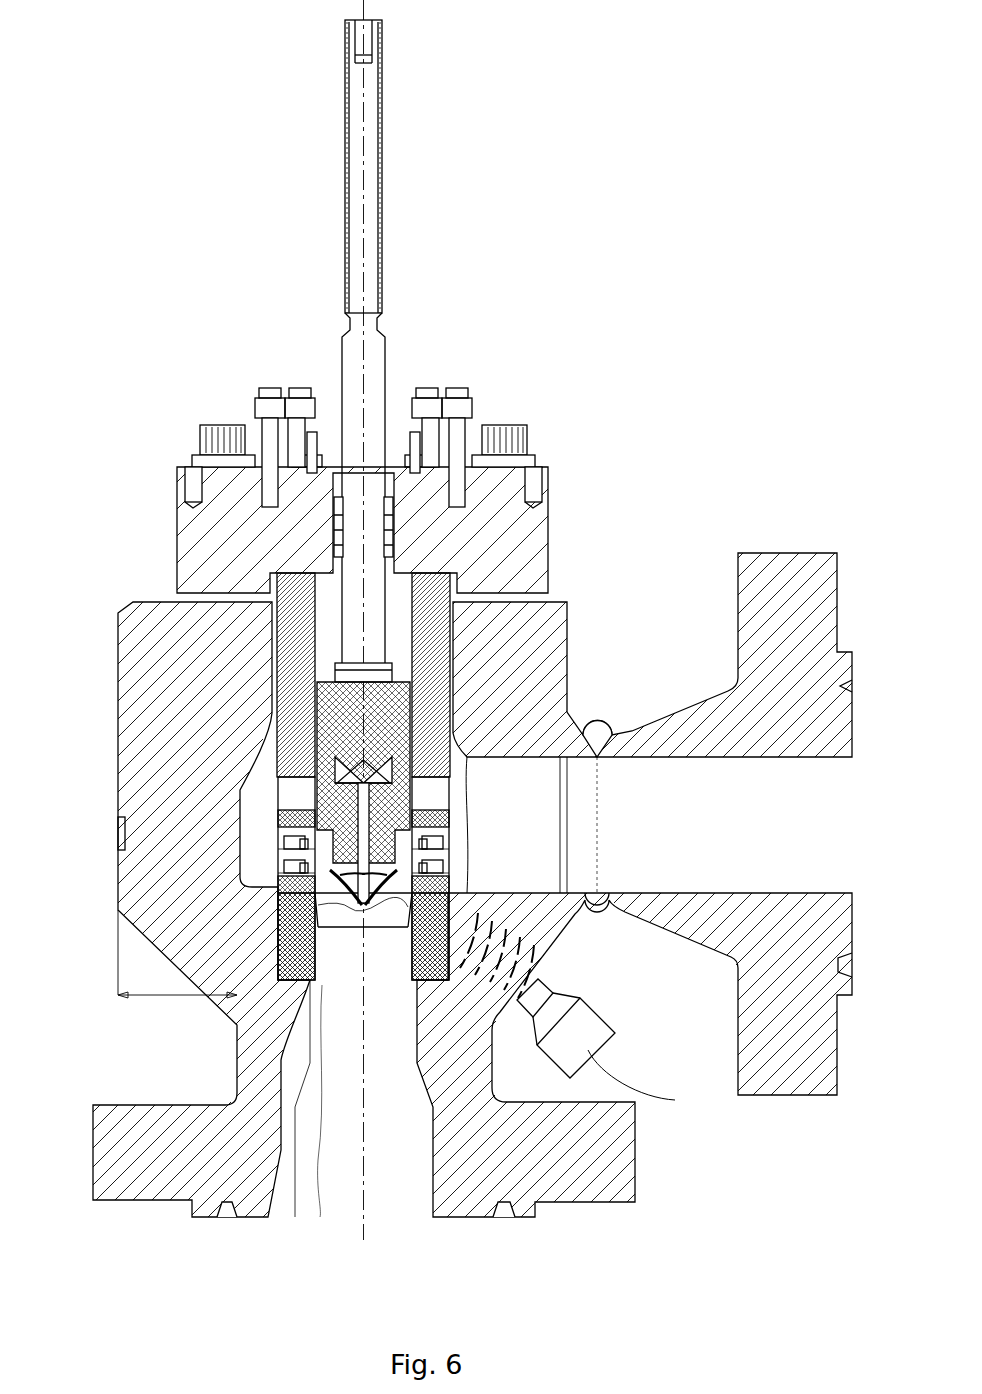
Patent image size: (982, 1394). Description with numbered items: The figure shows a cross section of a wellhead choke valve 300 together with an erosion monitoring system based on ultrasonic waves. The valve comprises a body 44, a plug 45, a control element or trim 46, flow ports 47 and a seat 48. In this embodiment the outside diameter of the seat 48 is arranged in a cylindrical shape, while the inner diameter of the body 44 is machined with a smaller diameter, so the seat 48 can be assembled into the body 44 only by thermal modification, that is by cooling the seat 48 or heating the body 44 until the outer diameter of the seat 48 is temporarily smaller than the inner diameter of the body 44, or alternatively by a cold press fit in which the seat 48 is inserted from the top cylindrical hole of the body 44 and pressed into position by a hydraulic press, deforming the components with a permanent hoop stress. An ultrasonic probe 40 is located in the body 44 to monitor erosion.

The choke valve 300 is at (645, 540).
The body 44 is at (237, 1017).
The plug 45 is at (282, 843).
The control element or trim 46 is at (278, 810).
The flow ports 47 is at (450, 878).
The seat 48 is at (458, 935).
The ultrasonic probe 40 is at (574, 1028).